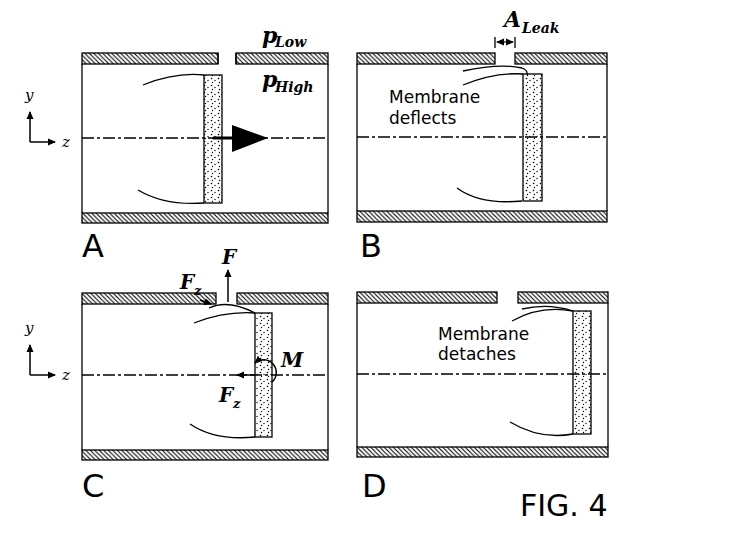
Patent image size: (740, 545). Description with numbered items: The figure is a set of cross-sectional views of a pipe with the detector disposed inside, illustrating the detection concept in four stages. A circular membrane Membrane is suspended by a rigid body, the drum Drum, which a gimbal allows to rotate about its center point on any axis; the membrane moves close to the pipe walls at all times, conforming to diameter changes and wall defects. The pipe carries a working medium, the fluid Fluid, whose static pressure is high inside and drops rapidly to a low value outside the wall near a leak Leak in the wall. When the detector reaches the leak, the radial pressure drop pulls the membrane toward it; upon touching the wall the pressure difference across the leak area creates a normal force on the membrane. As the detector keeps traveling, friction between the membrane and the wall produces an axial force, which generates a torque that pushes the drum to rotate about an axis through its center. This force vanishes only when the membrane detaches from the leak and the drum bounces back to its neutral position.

The drum Drum is at (187, 139).
The membrane Membrane is at (150, 138).
The leak Leak is at (211, 47).
The fluid Fluid is at (285, 169).